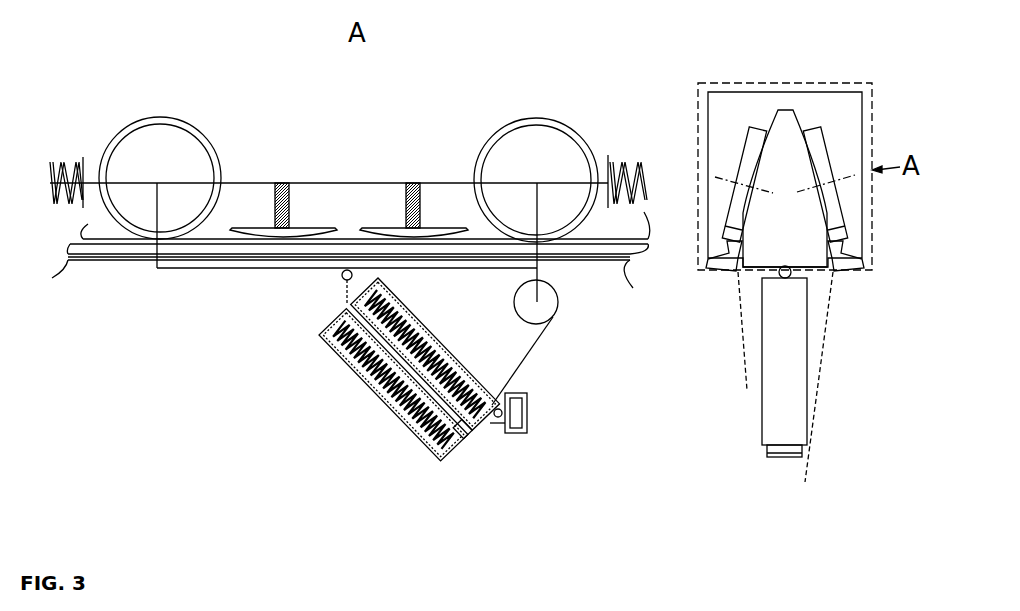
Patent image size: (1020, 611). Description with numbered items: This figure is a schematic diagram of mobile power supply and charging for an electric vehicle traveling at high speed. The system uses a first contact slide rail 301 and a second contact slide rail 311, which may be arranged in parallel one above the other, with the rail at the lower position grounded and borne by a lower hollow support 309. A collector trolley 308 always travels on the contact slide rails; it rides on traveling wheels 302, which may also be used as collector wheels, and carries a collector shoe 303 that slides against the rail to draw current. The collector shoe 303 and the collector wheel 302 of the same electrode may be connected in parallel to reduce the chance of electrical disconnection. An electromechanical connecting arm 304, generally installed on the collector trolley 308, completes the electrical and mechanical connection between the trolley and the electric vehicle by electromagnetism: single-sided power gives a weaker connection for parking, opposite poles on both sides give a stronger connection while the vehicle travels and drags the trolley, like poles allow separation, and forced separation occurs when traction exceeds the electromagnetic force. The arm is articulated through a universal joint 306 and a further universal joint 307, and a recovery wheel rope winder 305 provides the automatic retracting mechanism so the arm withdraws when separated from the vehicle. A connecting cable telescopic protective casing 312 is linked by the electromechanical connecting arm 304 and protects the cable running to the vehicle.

The first contact slide rail 301 is at (565, 252).
The traveling wheel 302 is at (805, 155).
The collector shoe 303 is at (397, 227).
The electromechanical connecting arm 304 is at (463, 357).
The recovery wheel rope winder 305 is at (560, 320).
The universal joint 306 is at (337, 280).
The universal joint 307 is at (503, 430).
The collector trolley 308 is at (187, 277).
The lower hollow support 309 is at (690, 103).
The second contact slide rail 311 is at (418, 490).
The connecting cable telescopic protective casing 312 is at (380, 408).